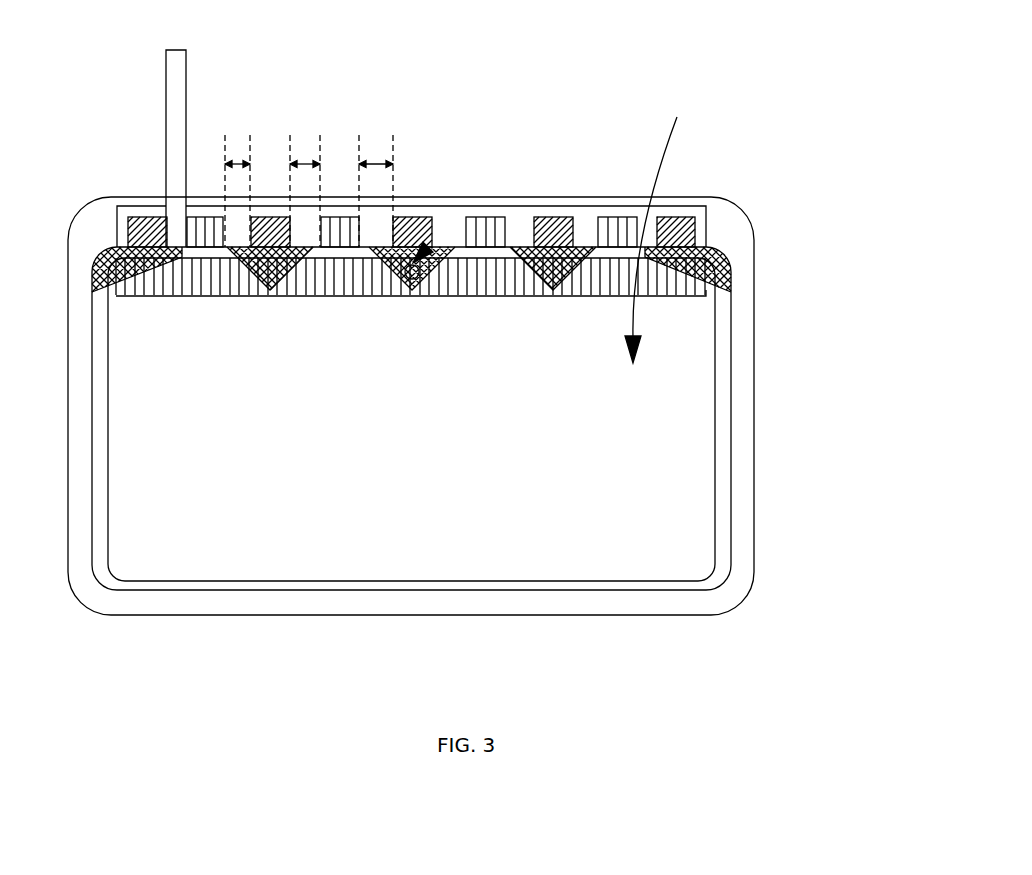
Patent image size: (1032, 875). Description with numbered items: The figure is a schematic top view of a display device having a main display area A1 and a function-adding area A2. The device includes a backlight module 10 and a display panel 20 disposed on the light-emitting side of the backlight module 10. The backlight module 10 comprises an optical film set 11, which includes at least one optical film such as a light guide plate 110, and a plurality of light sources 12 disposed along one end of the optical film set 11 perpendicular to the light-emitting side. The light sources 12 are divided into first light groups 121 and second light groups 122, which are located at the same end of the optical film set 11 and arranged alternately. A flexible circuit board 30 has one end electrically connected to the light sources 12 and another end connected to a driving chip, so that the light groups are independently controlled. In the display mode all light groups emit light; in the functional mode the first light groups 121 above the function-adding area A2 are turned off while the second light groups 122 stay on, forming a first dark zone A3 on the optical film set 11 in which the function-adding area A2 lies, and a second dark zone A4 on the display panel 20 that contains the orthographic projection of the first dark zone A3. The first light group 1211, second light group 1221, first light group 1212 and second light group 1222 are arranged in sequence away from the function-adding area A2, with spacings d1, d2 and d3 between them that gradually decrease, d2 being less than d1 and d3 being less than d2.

The backlight module 10 is at (755, 305).
The optical film set 11 is at (504, 418).
The light guide plate 110 is at (411, 277).
The light sources 12 is at (423, 180).
The first light groups 121 is at (379, 187).
The first light group 1211 is at (407, 217).
The first light group 1212 is at (270, 216).
The second light groups 122 is at (375, 158).
The second light group 1221 is at (343, 217).
The second light group 1222 is at (205, 216).
The display panel 20 is at (716, 482).
The flexible circuit board 30 is at (166, 98).
The main display area A1 is at (671, 218).
The function-adding area A2 is at (428, 247).
The first dark zone A3 is at (418, 267).
The second dark zone A4 is at (466, 295).
The spacing d1 is at (376, 190).
The spacing d2 is at (305, 190).
The spacing d3 is at (238, 190).